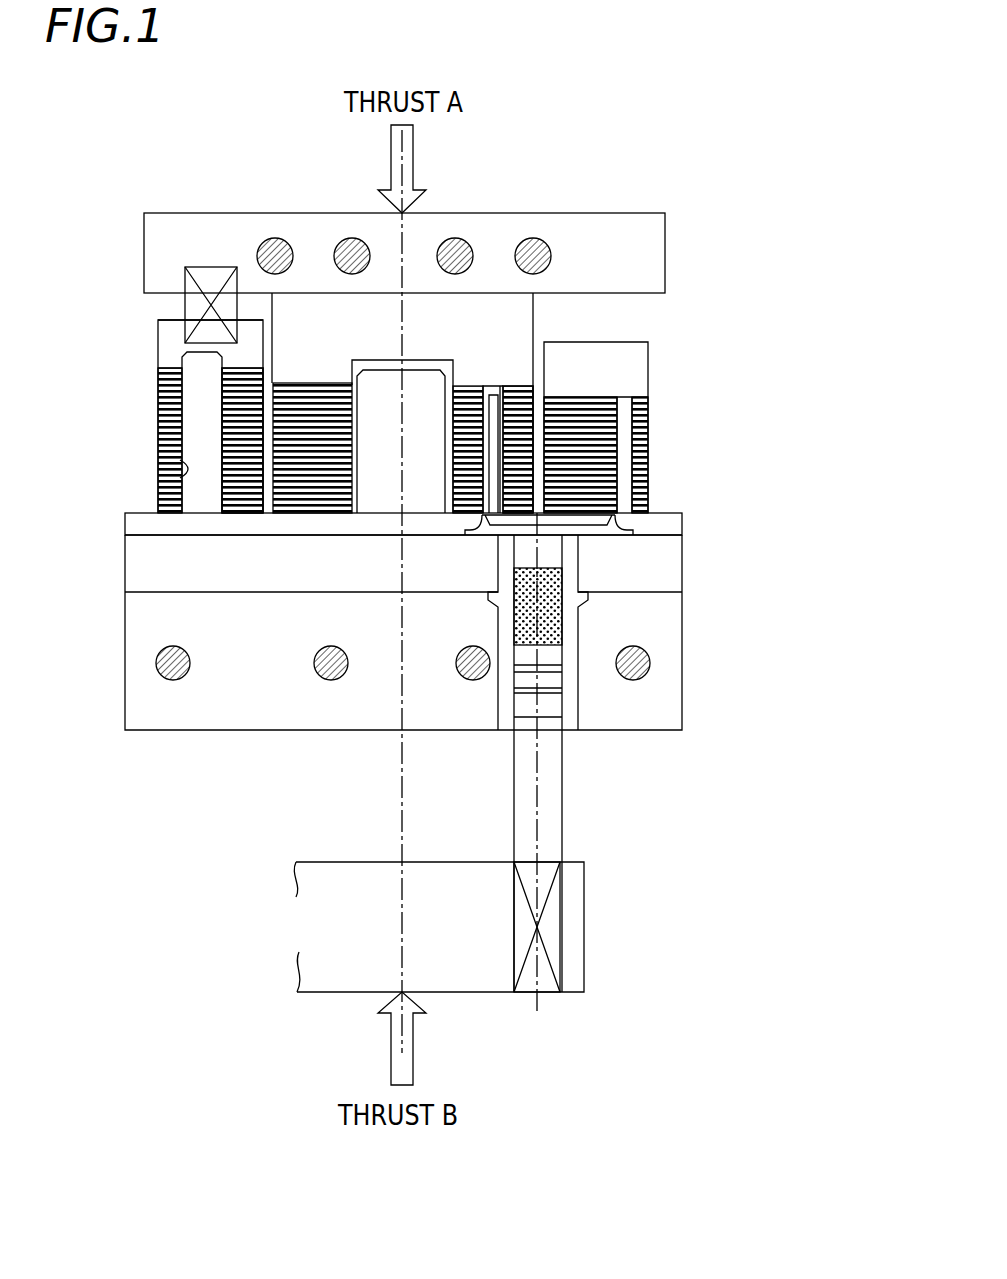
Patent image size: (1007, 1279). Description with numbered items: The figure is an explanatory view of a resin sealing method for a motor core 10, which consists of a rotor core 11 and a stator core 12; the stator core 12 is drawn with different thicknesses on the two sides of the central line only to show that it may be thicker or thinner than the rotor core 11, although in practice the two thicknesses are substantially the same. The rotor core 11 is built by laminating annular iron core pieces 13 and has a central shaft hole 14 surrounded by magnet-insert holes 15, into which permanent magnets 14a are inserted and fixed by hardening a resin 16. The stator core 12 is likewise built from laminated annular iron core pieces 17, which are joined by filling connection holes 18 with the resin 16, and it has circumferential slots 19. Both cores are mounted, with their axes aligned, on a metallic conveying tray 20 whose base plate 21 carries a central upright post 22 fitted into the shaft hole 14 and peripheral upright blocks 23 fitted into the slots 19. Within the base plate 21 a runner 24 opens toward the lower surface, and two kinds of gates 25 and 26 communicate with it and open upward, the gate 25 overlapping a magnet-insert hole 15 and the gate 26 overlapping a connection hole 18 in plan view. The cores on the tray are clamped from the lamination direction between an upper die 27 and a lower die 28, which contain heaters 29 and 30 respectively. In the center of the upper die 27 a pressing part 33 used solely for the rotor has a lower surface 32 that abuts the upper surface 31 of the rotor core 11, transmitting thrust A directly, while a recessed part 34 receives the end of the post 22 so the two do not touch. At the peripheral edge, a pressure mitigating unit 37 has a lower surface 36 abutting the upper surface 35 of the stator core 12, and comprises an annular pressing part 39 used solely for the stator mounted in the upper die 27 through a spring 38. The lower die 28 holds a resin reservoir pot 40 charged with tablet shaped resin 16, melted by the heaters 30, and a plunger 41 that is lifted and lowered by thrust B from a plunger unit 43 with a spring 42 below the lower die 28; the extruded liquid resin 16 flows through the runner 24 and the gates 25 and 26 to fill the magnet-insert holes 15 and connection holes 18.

The motor core 10 is at (125, 410).
The rotor core 11 is at (320, 382).
The stator core 12 is at (155, 440).
The annular iron core piece 13 is at (525, 420).
The shaft hole 14 is at (462, 368).
The permanent magnet 14a is at (498, 482).
The magnet-insert hole 15 is at (487, 463).
The resin 16 is at (558, 580).
The annular iron core piece 17 is at (518, 477).
The connection hole 18 is at (620, 500).
The slot 19 is at (160, 478).
The conveying tray 20 is at (123, 521).
The base plate 21 is at (152, 528).
The post 22 is at (445, 372).
The block 23 is at (195, 392).
The runner 24 is at (595, 531).
The gate 25 is at (485, 516).
The gate 26 is at (640, 540).
The upper die 27 is at (648, 198).
The lower die 28 is at (688, 692).
The heater 29 is at (355, 234).
The heater 30 is at (317, 682).
The upper surface of the rotor core 31 is at (477, 385).
The lower surface of the pressing part 32 is at (540, 397).
The pressing part used solely for the rotor 33 is at (415, 305).
The recessed part 34 is at (445, 413).
The upper surface of the stator core 35 is at (252, 370).
The lower surface of the pressure mitigating unit 36 is at (237, 370).
The pressure mitigating unit 37 is at (168, 330).
The spring 38 is at (193, 287).
The pressing part used solely for the stator 39 is at (155, 338).
The resin reservoir pot 40 is at (600, 608).
The plunger 41 is at (568, 694).
The spring 42 is at (548, 928).
The plunger unit 43 is at (590, 872).